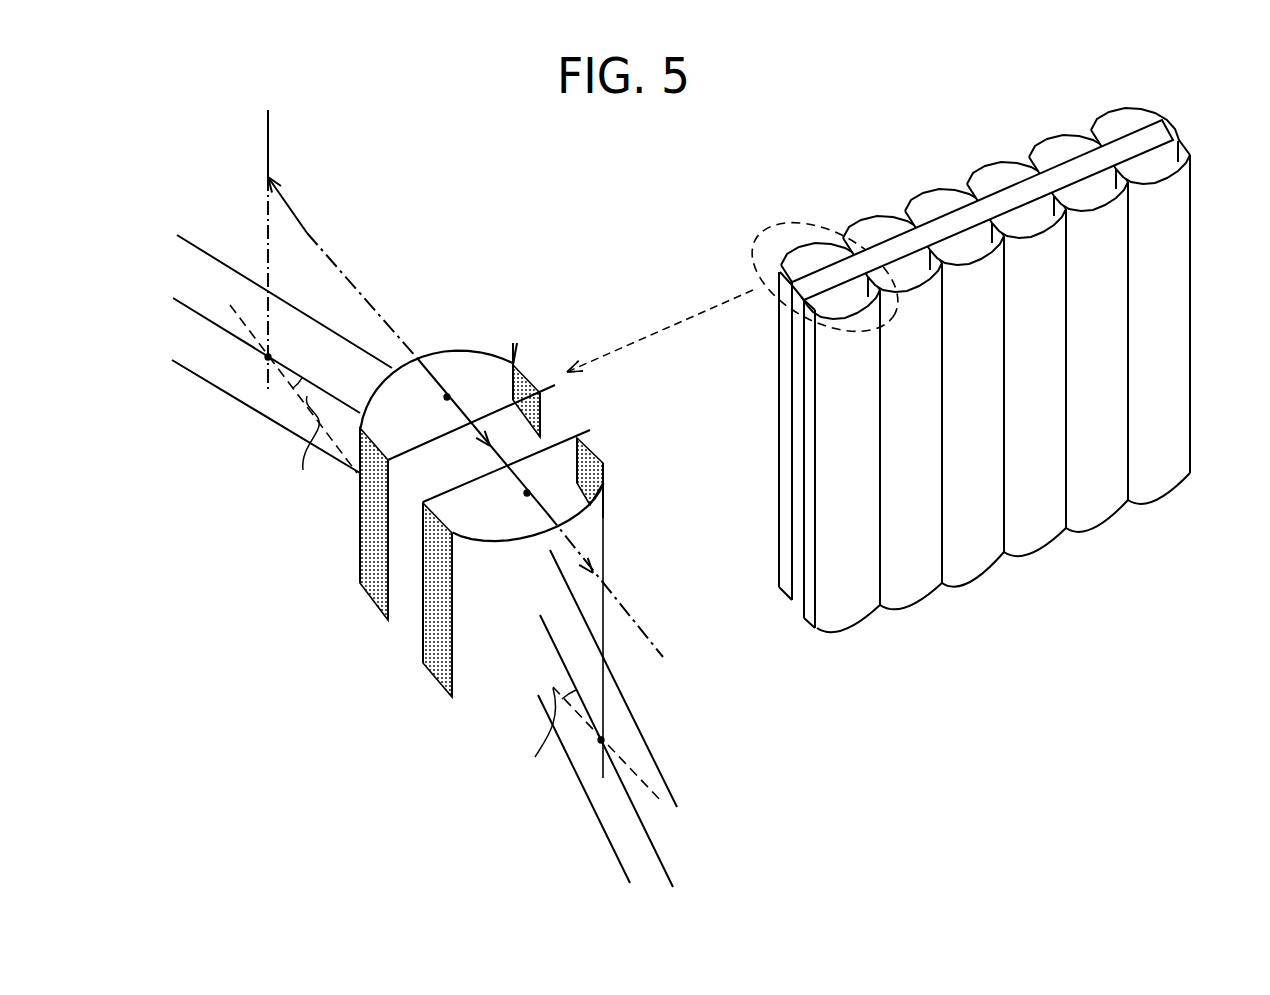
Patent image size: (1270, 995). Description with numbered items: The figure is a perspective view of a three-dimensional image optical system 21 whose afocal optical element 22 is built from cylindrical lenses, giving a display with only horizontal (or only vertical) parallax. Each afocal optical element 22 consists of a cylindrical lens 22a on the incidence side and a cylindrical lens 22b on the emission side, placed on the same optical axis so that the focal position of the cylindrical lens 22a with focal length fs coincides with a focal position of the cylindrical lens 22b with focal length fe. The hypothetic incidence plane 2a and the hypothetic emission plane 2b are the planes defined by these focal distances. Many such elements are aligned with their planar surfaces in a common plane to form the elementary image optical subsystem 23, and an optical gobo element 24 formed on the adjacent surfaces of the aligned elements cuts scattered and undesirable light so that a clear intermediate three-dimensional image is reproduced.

The hypothetic incidence plane 2a is at (268, 135).
The hypothetic emission plane 2b is at (602, 615).
The three-dimensional image optical system 21 is at (925, 148).
The afocal optical element 22 is at (323, 536).
The cylindrical lens 22a is at (447, 373).
The cylindrical lens 22b is at (563, 513).
The elementary image optical subsystem 23 is at (766, 564).
The optical gobo element 24 is at (533, 370).